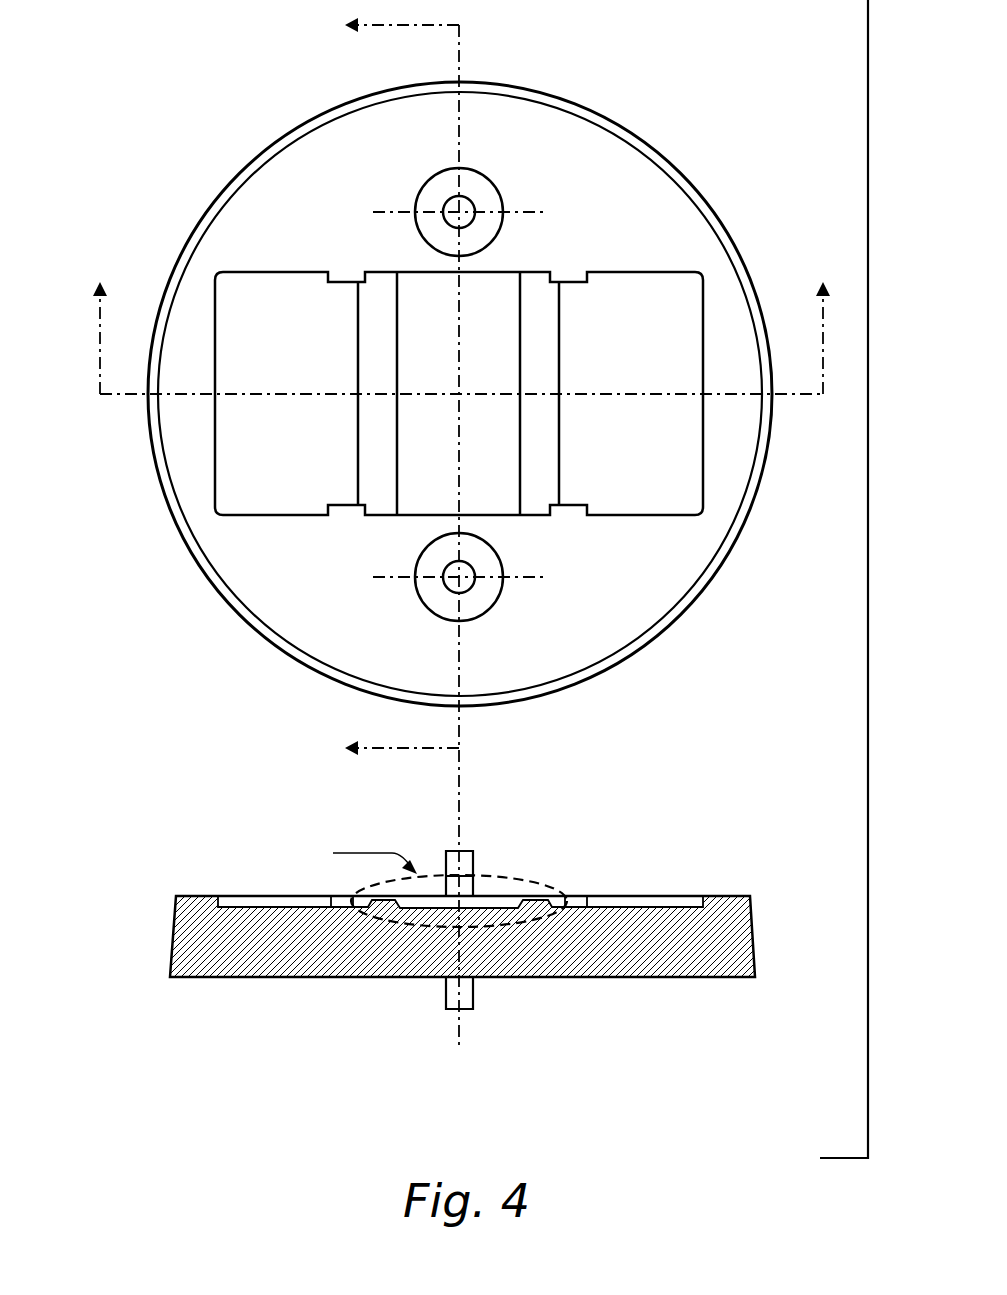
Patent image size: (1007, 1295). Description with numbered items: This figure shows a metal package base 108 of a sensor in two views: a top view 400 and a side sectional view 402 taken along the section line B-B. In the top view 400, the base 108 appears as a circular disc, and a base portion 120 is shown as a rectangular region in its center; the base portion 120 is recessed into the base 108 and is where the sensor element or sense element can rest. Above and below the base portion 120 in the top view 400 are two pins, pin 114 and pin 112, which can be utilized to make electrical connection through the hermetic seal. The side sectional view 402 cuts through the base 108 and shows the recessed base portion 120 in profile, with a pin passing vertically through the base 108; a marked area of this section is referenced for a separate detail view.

The top view 400 is at (134, 142).
The package base 108 is at (218, 243).
The base portion 120 is at (673, 268).
The pin 114 is at (443, 205).
The pin 112 is at (443, 585).
The side sectional view 402 is at (688, 847).